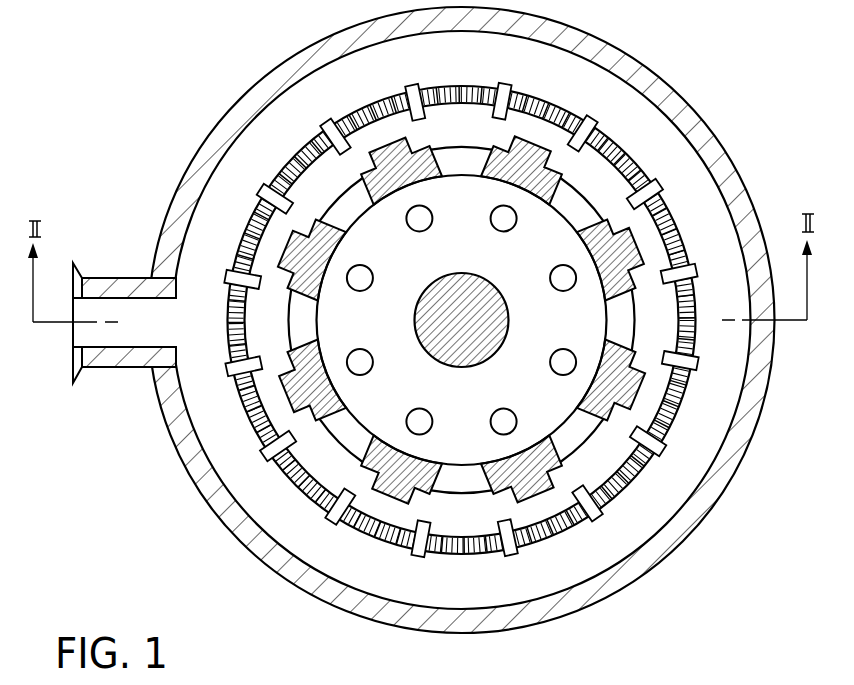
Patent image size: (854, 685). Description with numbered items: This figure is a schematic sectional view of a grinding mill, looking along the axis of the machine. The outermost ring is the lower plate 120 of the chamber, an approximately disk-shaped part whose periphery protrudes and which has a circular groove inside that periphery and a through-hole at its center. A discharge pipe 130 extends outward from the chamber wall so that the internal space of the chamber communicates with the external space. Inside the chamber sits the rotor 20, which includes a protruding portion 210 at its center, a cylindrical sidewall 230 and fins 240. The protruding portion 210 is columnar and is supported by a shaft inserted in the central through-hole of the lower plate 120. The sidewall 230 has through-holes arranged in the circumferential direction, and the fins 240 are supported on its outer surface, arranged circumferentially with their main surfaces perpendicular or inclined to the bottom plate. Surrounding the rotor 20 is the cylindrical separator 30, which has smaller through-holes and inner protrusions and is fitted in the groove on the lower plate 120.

The rotor 20 is at (420, 322).
The separator 30 is at (692, 373).
The lower plate 120 is at (648, 68).
The discharge pipe 130 is at (118, 278).
The protruding portion 210 is at (415, 327).
The sidewall 230 is at (372, 172).
The fins 240 is at (291, 389).